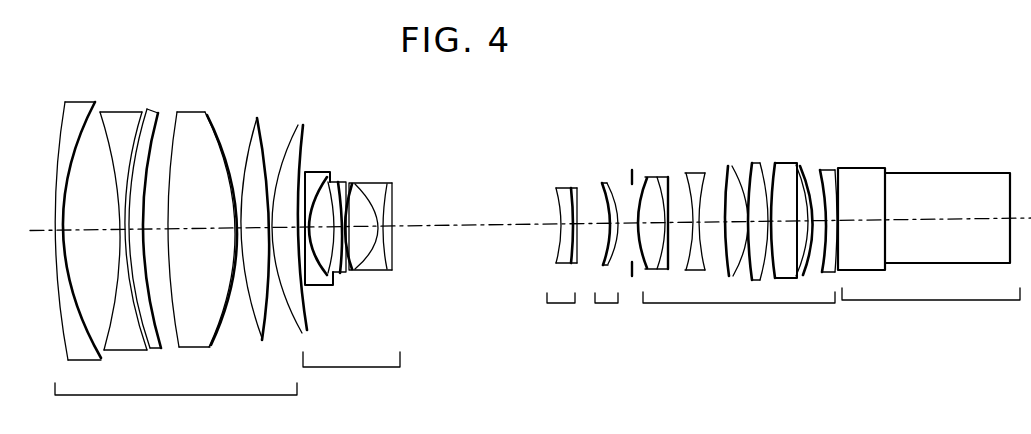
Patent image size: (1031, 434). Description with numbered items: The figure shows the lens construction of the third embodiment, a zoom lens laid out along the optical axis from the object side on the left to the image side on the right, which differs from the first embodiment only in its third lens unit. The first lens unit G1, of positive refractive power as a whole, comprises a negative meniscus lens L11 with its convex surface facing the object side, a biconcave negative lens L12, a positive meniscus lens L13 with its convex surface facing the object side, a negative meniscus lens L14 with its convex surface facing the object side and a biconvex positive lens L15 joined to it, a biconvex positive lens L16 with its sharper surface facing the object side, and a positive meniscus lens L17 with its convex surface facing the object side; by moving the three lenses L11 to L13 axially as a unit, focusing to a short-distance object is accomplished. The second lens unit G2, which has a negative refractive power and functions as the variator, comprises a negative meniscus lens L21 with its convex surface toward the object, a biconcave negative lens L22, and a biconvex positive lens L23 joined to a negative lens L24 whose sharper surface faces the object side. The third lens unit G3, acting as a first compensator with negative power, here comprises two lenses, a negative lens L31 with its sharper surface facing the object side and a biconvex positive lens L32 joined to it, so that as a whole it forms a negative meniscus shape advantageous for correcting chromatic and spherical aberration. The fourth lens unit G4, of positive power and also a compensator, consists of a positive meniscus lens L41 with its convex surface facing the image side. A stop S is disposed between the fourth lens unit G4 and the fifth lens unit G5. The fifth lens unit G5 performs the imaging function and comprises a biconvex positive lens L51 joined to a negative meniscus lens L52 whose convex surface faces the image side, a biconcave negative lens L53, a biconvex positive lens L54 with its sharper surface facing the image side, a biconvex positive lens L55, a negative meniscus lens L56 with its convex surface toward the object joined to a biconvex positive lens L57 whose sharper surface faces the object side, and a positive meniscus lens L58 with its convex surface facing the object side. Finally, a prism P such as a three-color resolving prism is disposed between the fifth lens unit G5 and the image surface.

The negative meniscus lens L11 is at (80, 108).
The biconcave negative lens L12 is at (115, 115).
The positive meniscus lens L13 is at (155, 112).
The negative meniscus lens L14 is at (187, 116).
The biconvex positive lens L15 is at (216, 117).
The biconvex positive lens L16 is at (262, 115).
The positive meniscus lens L17 is at (305, 125).
The negative meniscus lens L21 is at (317, 172).
The biconcave negative lens L22 is at (342, 182).
The biconvex positive lens L23 is at (360, 183).
The negative lens L24 is at (380, 183).
The negative lens L31 is at (558, 190).
The biconvex positive lens L32 is at (570, 188).
The positive meniscus lens L41 is at (605, 185).
The biconvex positive lens L51 is at (643, 180).
The negative meniscus lens L52 is at (660, 178).
The biconcave negative lens L53 is at (700, 178).
The biconvex positive lens L54 is at (730, 178).
The biconvex positive lens L55 is at (757, 178).
The negative meniscus lens L56 is at (777, 178).
The biconvex positive lens L57 is at (800, 178).
The positive meniscus lens L58 is at (823, 178).
The first lens unit G1 is at (176, 405).
The second lens unit G2 is at (351, 374).
The third lens unit G3 is at (564, 314).
The fourth lens unit G4 is at (610, 314).
The fifth lens unit G5 is at (739, 313).
The stop S is at (632, 276).
The prism P is at (929, 250).